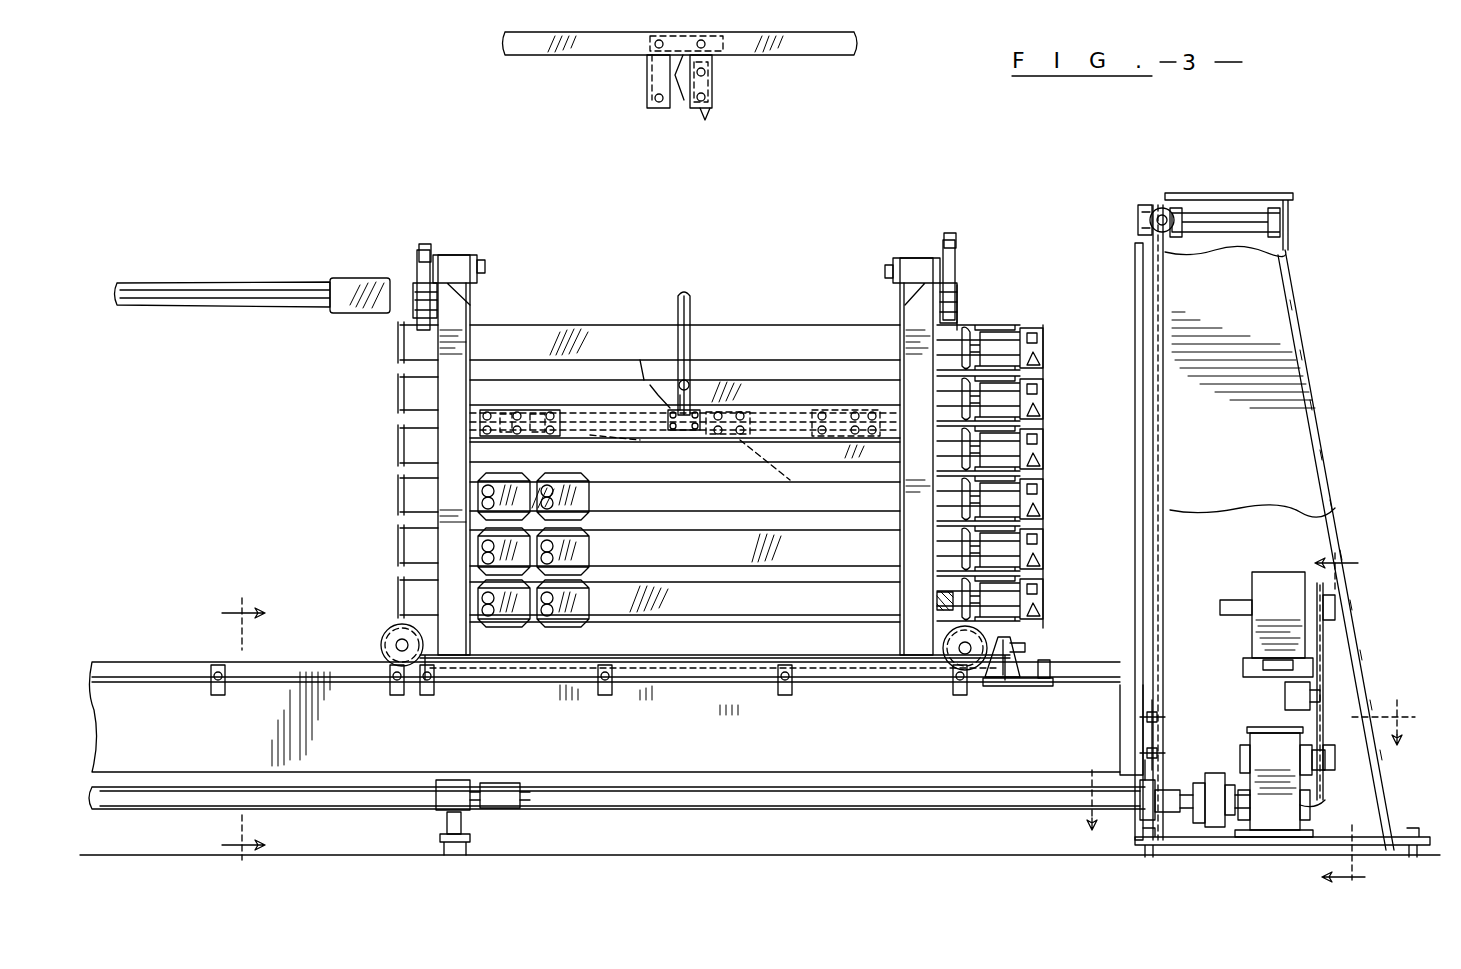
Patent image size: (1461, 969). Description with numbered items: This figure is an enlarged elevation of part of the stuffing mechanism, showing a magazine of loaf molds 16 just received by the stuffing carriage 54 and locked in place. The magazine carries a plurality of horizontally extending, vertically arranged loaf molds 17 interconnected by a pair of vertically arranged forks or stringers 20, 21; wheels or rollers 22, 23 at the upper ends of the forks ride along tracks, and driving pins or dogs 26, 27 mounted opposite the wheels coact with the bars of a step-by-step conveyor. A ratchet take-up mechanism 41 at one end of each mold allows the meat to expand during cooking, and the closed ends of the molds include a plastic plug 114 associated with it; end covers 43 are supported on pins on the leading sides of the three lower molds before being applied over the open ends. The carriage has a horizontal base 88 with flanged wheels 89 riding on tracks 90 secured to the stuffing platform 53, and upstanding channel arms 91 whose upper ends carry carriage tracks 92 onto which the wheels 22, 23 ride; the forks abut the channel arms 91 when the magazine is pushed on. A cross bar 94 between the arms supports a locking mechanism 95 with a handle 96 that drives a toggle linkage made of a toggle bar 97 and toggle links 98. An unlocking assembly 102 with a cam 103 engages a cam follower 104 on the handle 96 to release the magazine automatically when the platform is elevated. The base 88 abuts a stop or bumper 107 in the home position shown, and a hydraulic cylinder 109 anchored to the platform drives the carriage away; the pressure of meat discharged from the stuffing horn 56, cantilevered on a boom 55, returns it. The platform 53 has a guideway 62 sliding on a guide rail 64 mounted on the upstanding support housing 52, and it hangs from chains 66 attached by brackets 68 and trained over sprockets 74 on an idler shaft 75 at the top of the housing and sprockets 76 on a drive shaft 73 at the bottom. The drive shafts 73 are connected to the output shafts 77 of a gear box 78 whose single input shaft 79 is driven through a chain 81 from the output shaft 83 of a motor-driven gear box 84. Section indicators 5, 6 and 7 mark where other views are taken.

The section line 5- 5 is at (235, 744).
The section line 6- 6 is at (1337, 718).
The section line 7- 7 is at (1240, 761).
The magazine of loaf molds 16 is at (970, 327).
The loaf molds 17 is at (785, 385).
The fork or stringer 20 is at (460, 260).
The fork or stringer 21 is at (916, 265).
The wheel or roller 22 is at (423, 246).
The wheel or roller 23 is at (949, 248).
The driving pin or dog 26 is at (485, 266).
The driving pin or dog 27 is at (886, 270).
The ratchet take-up mechanism 41 is at (1023, 325).
The end covers 43 is at (580, 605).
The support housing 52 is at (1313, 420).
The stuffing platform 53 is at (810, 767).
The stuffing carriage 54 is at (952, 326).
The boom 55 is at (200, 293).
The stuffing horn 56 is at (338, 282).
The guideway 62 is at (1125, 708).
The guide rail 64 is at (1135, 393).
The chains 66 is at (1160, 470).
The brackets 68 is at (1157, 720).
The drive shafts 73 is at (980, 810).
The sprockets 74 is at (1148, 210).
The idler shaft 75 is at (1165, 208).
The sprockets 76 is at (1143, 822).
The output shafts 77 is at (1235, 830).
The gear box 78 is at (1270, 840).
The input shaft 79 is at (1312, 790).
The chain 81 is at (1312, 680).
The output shaft 83 is at (1335, 605).
The gear box 84 is at (1282, 575).
The base 88 is at (712, 640).
The wheels 89 is at (388, 635).
The tracks 90 is at (277, 662).
The channel arms 91 is at (458, 330).
The carriage tracks 92 is at (418, 290).
The cross bar 94 is at (705, 405).
The locking mechanism 95 is at (677, 390).
The handle 96 is at (688, 294).
The toggle bar 97 is at (655, 400).
The toggle links 98 is at (615, 437).
The unlocking assembly 102 is at (728, 90).
The cam 103 is at (684, 100).
The cam roller or follower 104 is at (694, 408).
The stop or bumper 107 is at (1005, 650).
The hydraulic cylinder 109 is at (1030, 672).
The plastic plug 114 is at (958, 592).